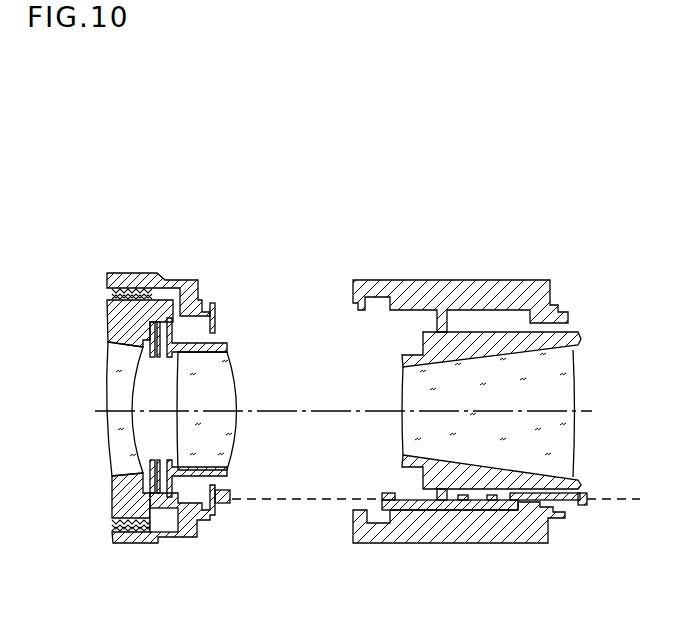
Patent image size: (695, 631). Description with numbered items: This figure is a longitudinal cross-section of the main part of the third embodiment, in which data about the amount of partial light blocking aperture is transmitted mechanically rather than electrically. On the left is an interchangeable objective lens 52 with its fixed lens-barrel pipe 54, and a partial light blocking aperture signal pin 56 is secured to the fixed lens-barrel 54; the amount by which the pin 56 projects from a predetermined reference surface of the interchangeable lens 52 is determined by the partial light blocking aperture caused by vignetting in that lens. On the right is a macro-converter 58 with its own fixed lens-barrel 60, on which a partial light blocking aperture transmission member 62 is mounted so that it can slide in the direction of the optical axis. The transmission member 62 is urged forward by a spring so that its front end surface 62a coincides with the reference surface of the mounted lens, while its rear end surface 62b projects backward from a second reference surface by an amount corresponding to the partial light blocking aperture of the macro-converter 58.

The interchangeable lens 52 is at (178, 262).
The fixed lens-barrel pipe 54 is at (211, 515).
The partial light blocking aperture signal pin 56 is at (227, 503).
The macro-converter 58 is at (463, 268).
The fixed lens-barrel 60 is at (512, 533).
The partial light blocking aperture transmission member 62 is at (462, 513).
The front end surface 62a is at (382, 495).
The rear end surface 62b is at (583, 505).